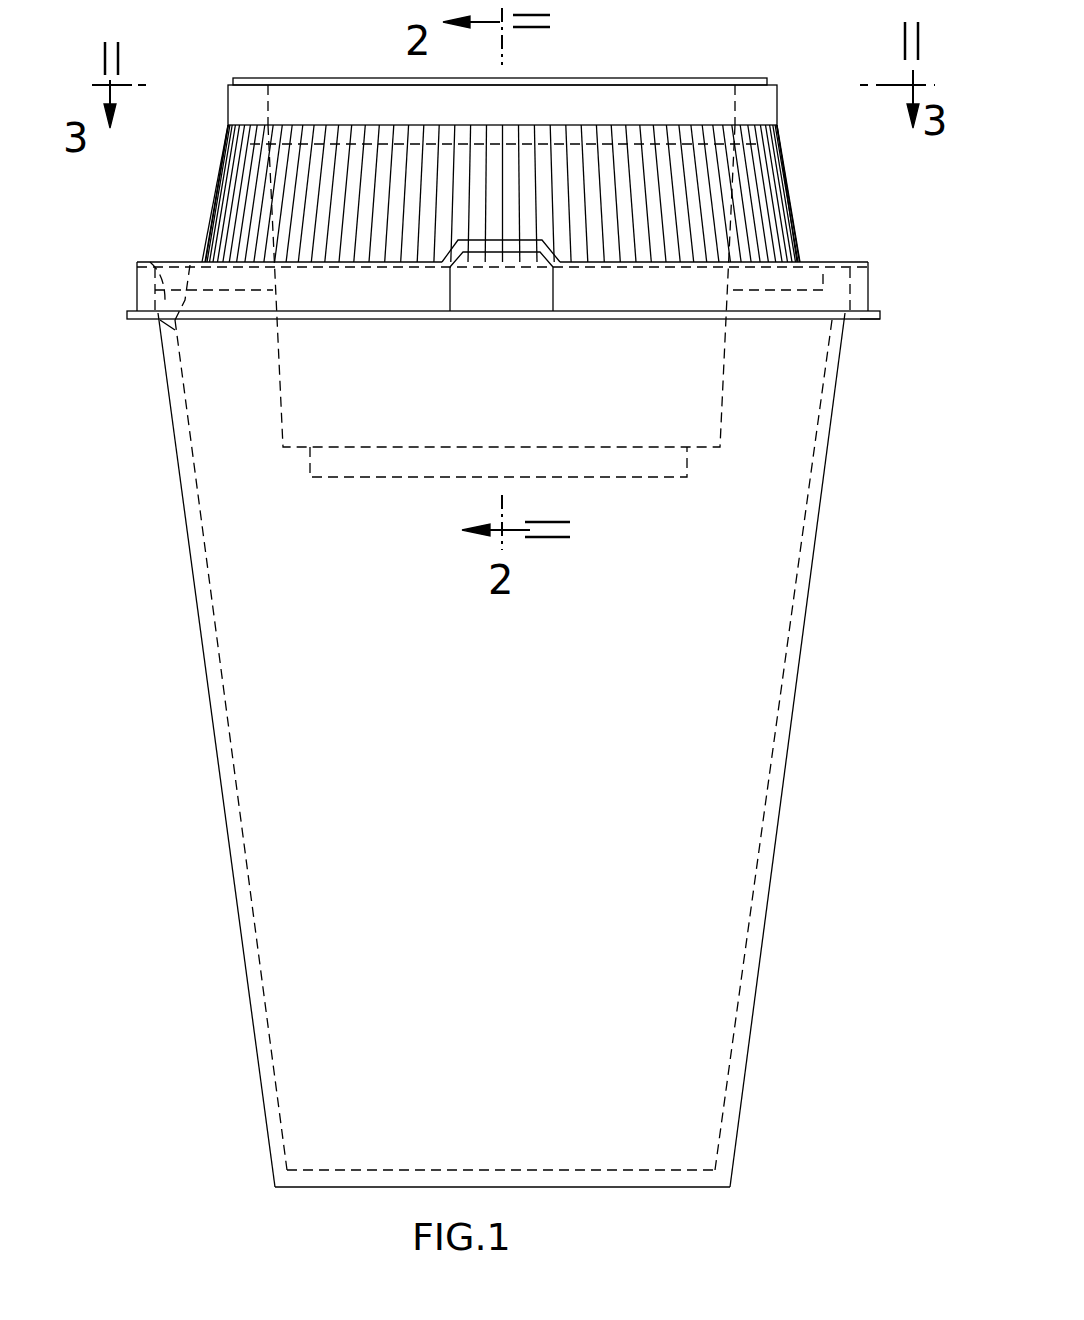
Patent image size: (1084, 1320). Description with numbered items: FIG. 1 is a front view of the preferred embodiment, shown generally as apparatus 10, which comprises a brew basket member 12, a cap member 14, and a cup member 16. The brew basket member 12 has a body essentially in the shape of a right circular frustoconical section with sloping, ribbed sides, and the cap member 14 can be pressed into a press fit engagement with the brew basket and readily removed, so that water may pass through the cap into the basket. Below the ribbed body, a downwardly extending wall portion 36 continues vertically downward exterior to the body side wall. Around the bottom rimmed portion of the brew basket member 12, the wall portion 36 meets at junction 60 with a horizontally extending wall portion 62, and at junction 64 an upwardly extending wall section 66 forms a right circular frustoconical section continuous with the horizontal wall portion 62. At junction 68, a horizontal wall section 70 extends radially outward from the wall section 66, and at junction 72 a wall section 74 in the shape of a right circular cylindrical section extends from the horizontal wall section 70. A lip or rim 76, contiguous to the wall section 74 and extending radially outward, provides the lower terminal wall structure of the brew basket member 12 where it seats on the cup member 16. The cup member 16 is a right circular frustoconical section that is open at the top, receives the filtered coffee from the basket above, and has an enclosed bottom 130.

The apparatus 10 is at (785, 112).
The brew basket member 12 is at (225, 100).
The cap member 14 is at (680, 76).
The cup member 16 is at (785, 913).
The downwardly extending wall portion 36 is at (222, 165).
The junction 60 is at (200, 300).
The horizontally extending wall portion 62 is at (162, 322).
The junction 64 is at (196, 262).
The upwardly extending wall section 66 is at (148, 293).
The junction 68 is at (155, 262).
The horizontal wall section 70 is at (155, 262).
The junction 72 is at (868, 262).
The wall section 74 is at (870, 290).
The lip or rim 76 is at (880, 320).
The enclosed bottom 130 is at (643, 1187).